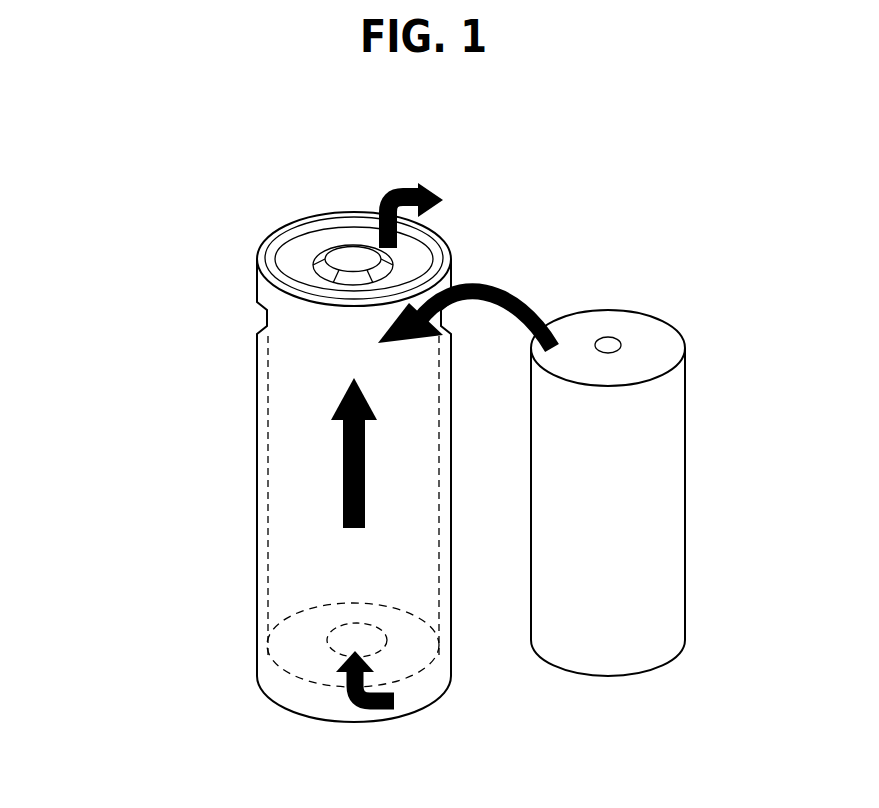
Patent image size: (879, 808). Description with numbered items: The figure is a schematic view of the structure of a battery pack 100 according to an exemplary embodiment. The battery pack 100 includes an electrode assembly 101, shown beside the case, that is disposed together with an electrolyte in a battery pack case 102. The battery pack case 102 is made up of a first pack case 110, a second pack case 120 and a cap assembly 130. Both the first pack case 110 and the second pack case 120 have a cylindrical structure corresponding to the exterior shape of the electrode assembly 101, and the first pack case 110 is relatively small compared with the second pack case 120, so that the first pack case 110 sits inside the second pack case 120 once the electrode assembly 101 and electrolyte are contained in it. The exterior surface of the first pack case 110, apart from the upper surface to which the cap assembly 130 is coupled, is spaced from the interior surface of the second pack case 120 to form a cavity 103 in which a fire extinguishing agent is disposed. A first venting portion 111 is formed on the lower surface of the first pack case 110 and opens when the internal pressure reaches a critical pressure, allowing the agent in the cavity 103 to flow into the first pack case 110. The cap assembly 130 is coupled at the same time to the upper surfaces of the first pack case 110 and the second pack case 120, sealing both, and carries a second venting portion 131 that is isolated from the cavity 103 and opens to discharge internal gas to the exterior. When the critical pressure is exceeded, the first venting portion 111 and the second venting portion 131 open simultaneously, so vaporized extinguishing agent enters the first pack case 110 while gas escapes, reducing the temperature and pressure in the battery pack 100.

The battery pack 100 is at (150, 224).
The electrode assembly 101 is at (660, 338).
The battery pack case 102 is at (150, 325).
The cavity 103 is at (265, 617).
The first pack case 110 is at (268, 354).
The first venting portion 111 is at (360, 627).
The second pack case 120 is at (257, 457).
The cap assembly 130 is at (270, 255).
The second venting portion 131 is at (318, 257).